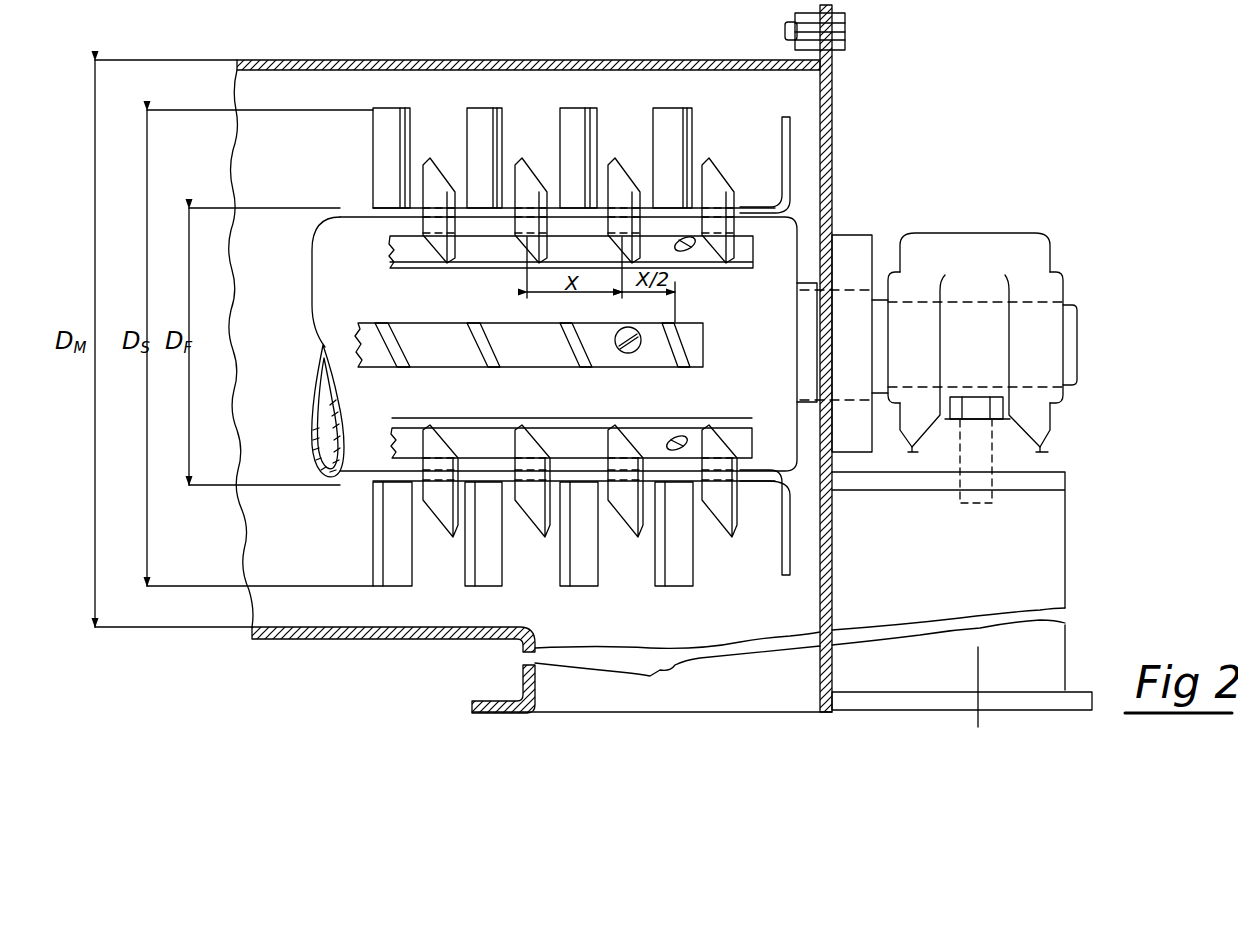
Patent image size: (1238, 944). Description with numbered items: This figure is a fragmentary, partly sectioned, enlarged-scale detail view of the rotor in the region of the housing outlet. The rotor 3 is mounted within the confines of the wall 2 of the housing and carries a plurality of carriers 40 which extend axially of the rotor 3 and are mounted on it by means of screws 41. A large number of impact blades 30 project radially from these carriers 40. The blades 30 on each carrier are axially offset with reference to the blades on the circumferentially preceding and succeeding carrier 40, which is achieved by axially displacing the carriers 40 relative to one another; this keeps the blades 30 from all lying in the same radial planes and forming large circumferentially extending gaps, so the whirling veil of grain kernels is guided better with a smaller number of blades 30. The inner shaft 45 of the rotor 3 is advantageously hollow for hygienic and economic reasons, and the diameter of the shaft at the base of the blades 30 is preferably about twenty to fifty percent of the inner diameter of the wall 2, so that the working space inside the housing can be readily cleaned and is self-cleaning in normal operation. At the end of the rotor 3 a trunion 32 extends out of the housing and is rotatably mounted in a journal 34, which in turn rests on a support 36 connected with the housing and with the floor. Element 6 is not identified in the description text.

The wall 2 is at (612, 62).
The impact blades 30 is at (783, 137).
The rotor 3 is at (728, 388).
The carriers 40 is at (690, 332).
The screws 41 is at (668, 440).
The inner shaft 45 is at (320, 437).
The journal 34 is at (1015, 260).
The trunion 32 is at (1068, 350).
The supports 36 is at (1033, 562).
The base plate 6 is at (682, 688).